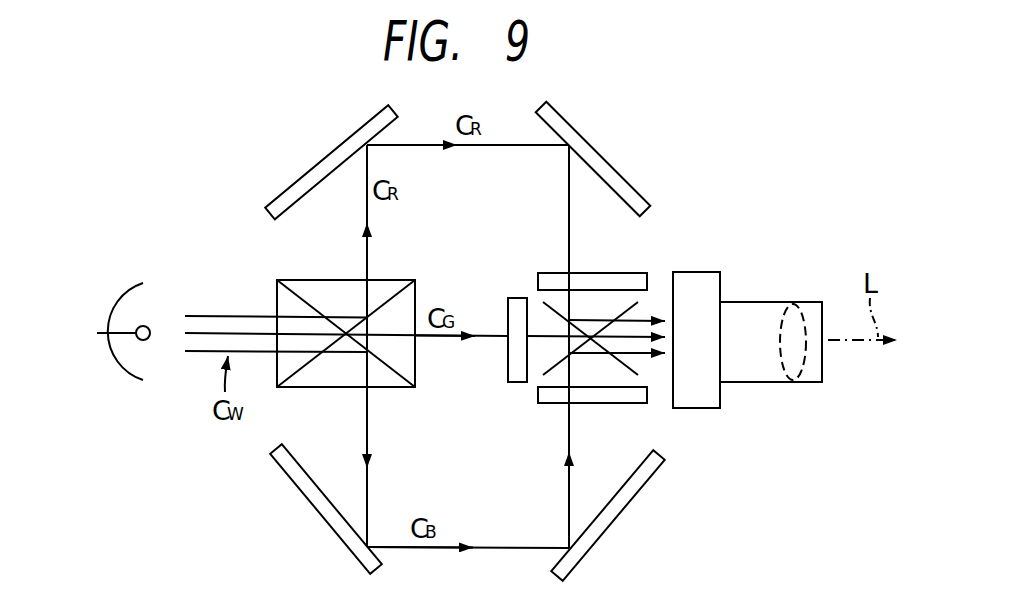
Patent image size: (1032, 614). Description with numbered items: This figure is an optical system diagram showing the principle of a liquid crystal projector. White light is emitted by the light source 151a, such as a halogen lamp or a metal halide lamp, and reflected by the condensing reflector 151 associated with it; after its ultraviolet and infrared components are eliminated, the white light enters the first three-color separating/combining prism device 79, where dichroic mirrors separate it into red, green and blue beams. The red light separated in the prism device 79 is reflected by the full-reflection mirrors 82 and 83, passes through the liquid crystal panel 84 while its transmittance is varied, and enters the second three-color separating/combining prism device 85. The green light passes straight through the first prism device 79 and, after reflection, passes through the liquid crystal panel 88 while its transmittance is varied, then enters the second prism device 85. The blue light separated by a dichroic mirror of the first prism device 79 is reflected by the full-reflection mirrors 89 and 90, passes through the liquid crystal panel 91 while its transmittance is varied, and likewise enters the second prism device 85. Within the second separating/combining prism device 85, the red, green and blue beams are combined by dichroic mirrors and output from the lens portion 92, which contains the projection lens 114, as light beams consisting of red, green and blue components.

The condensing reflector 151 is at (127, 290).
The light source 151a is at (145, 326).
The first three-color separating/combining prism device 79 is at (323, 391).
The full-reflection mirror 82 is at (368, 118).
The full-reflection mirror 83 is at (568, 117).
The liquid crystal panel 84 is at (553, 272).
The second three-color separating/combining prism device 85 is at (597, 312).
The liquid crystal panel 88 is at (508, 367).
The full-reflection mirror 89 is at (346, 548).
The full-reflection mirror 90 is at (580, 562).
The liquid crystal panel 91 is at (613, 403).
The lens portion 92 is at (750, 280).
The projection lens 114 is at (785, 367).